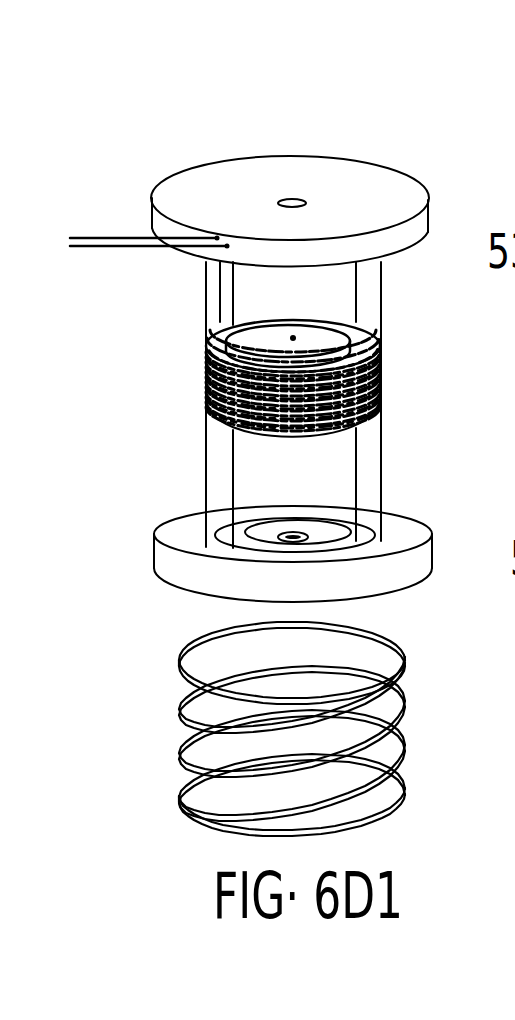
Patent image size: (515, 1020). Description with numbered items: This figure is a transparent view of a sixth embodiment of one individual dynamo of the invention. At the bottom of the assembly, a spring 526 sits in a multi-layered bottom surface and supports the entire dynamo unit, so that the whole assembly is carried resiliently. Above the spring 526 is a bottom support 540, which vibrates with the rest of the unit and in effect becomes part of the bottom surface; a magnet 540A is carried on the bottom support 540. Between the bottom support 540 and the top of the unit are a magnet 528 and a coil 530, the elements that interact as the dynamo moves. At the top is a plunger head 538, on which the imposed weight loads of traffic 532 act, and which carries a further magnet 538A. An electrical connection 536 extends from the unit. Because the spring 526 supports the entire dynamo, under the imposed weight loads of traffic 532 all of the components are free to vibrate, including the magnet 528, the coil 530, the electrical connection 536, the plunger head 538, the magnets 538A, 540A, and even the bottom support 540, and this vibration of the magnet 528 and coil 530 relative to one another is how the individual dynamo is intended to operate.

The spring 526 is at (360, 748).
The magnet 528 is at (313, 335).
The coil 530 is at (370, 400).
The imposed weight loads of traffic 532 is at (290, 140).
The electrical connection 536 is at (85, 249).
The plunger head 538 is at (230, 190).
The magnet 538A is at (303, 201).
The bottom support 540 is at (303, 587).
The magnet 540A is at (305, 535).